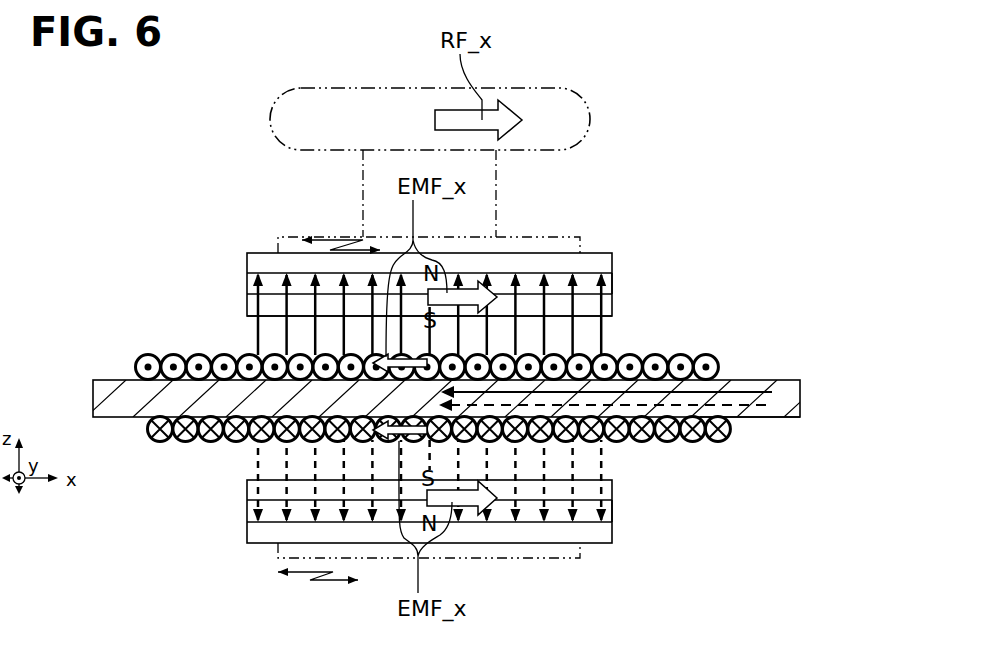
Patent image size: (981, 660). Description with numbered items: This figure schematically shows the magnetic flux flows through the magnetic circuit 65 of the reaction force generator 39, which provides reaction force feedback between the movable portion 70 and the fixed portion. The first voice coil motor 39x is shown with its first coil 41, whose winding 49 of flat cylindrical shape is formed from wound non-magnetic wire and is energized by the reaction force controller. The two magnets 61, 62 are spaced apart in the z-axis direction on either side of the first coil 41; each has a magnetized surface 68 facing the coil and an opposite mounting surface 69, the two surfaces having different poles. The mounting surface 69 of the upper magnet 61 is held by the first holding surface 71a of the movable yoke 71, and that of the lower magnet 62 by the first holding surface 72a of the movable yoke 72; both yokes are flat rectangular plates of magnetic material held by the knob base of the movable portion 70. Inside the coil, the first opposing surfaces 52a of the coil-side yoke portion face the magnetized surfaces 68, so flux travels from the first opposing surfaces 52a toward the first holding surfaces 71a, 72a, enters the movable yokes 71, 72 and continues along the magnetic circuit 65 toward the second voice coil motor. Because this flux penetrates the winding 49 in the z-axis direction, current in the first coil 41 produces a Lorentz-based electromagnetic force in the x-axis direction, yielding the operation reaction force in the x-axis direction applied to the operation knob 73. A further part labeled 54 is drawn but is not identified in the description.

The reaction force generator 39 is at (601, 226).
The first voice coil motor 39x is at (689, 306).
The first coil 41 is at (453, 392).
The winding 49 is at (722, 443).
The first opposing surfaces 52a is at (271, 355).
The conductive plate 54 is at (778, 418).
The magnet 61 is at (247, 306).
The magnet 62 is at (250, 492).
The magnetic circuit 65 is at (467, 395).
The magnetized surface 68 is at (273, 316).
The mounting surface 69 is at (529, 273).
The movable portion 70 is at (430, 88).
The movable yoke 71 is at (437, 250).
The first holding surface 71a is at (612, 280).
The movable yoke 72 is at (454, 549).
The first holding surface 72a is at (612, 513).
The operation knob 73 is at (340, 88).